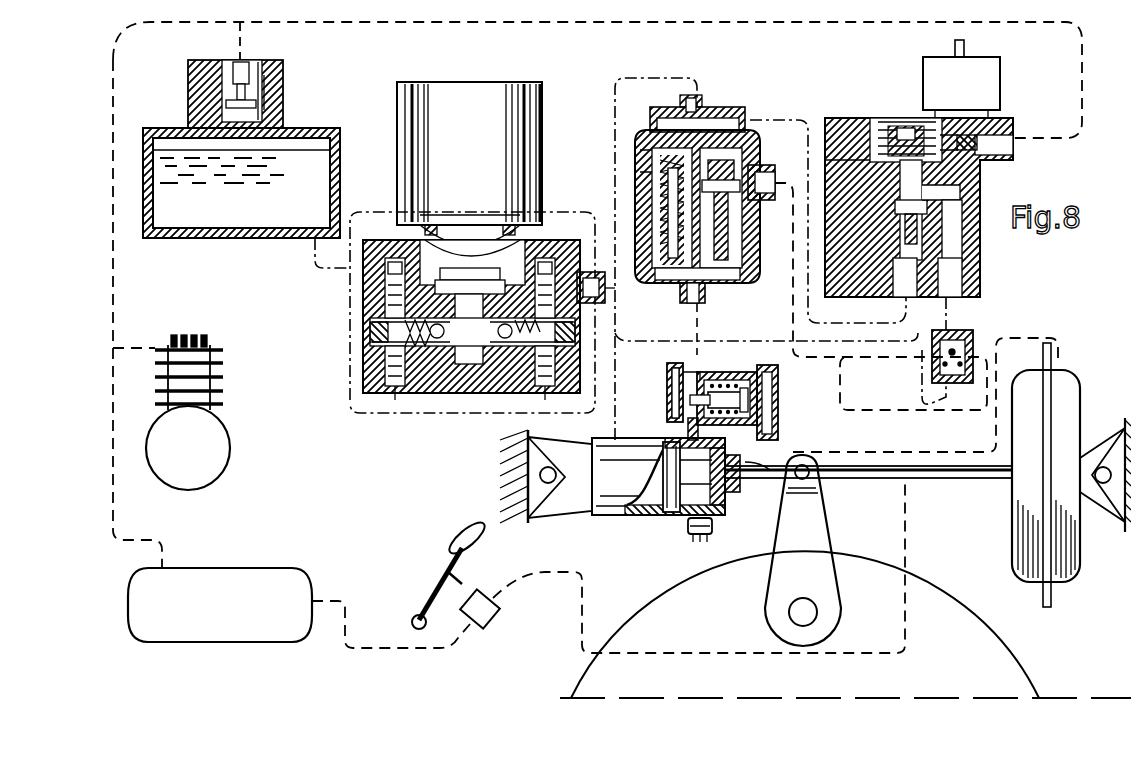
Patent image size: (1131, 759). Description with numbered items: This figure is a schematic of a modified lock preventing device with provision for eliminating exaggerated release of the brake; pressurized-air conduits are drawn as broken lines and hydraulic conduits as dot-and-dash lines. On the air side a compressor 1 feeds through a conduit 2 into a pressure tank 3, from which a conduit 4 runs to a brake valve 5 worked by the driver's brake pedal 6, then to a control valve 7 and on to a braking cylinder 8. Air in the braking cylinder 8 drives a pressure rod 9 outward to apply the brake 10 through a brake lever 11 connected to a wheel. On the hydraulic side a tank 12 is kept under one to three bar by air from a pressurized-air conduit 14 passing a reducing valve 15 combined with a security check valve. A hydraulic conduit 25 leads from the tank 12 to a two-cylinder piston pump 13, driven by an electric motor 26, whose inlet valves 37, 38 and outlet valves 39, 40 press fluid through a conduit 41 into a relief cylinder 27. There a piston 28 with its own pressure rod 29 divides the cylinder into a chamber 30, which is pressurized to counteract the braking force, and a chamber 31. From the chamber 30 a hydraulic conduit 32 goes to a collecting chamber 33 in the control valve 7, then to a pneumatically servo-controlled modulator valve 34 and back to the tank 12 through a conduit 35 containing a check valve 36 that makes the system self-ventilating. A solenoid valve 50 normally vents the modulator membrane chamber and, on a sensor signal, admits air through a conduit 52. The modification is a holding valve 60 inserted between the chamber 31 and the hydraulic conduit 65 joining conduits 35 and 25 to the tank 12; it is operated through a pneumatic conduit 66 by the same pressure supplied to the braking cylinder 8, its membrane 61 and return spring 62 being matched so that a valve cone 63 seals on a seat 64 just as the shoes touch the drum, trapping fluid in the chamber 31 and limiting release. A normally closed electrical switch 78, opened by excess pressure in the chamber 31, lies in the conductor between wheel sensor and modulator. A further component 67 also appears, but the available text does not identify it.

The compressor 1 is at (228, 428).
The conduit 2 is at (115, 497).
The pressure tank 3 is at (250, 568).
The conduit 4 is at (842, 388).
The brake valve 5 is at (488, 620).
The brake pedal 6 is at (444, 532).
The control valve 7 is at (756, 104).
The braking cylinder 8 is at (1070, 398).
The pressure rod 9 is at (954, 478).
The brake 10 is at (960, 626).
The brake lever 11 is at (822, 512).
The tank 12 is at (326, 128).
The pump 13 is at (360, 333).
The pressurized-air conduit 14 is at (115, 286).
The reducing valve 15 is at (288, 104).
The hydraulic conduit 25 is at (318, 262).
The electric motor 26 is at (548, 124).
The relief cylinder 27 is at (568, 514).
The piston 28 is at (670, 517).
The pressure rod 29 is at (770, 470).
The chamber 30 is at (645, 517).
The chamber 31 is at (726, 506).
The hydraulic conduit 32 is at (612, 145).
The collecting chamber 33 is at (720, 108).
The modulator valve 34 is at (982, 212).
The conduit 35 is at (906, 344).
The check valve 36 is at (955, 330).
The inlet valve 37 is at (368, 296).
The inlet valve 38 is at (568, 240).
The outlet valve 39 is at (363, 386).
The outlet valve 40 is at (550, 372).
The conduit 41 is at (470, 420).
The solenoid valve 50 is at (1001, 92).
The conduit 52 is at (458, 24).
The holding valve 60 is at (662, 408).
The membrane 61 is at (778, 412).
The return spring 62 is at (735, 372).
The valve cone 63 is at (740, 388).
The seat 64 is at (668, 380).
The hydraulic conduit 65 is at (665, 347).
The pneumatic conduit 66 is at (945, 452).
The switch 67 is at (602, 295).
The electrical switch 78 is at (706, 538).